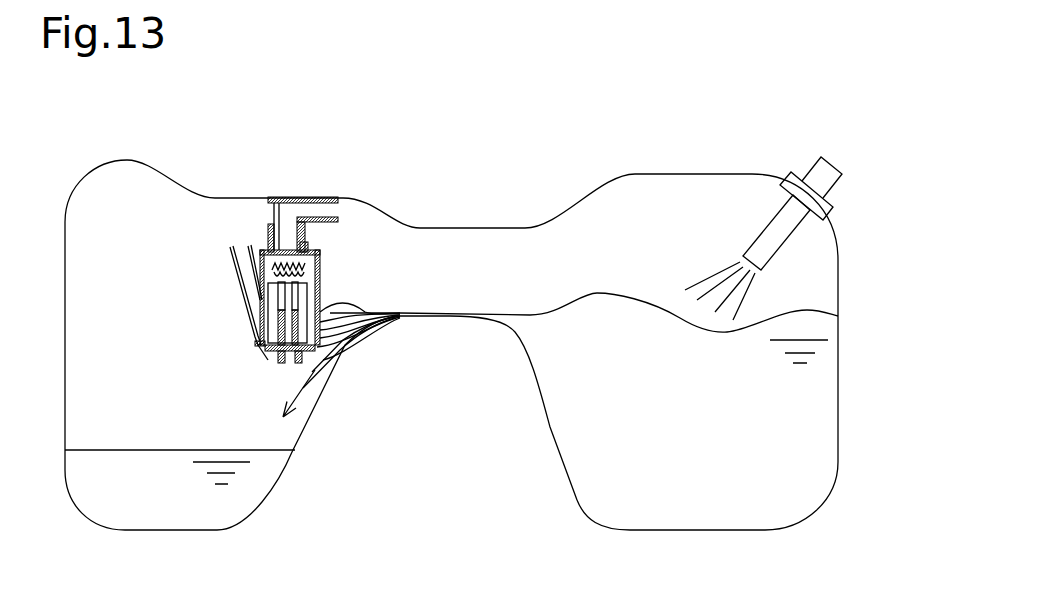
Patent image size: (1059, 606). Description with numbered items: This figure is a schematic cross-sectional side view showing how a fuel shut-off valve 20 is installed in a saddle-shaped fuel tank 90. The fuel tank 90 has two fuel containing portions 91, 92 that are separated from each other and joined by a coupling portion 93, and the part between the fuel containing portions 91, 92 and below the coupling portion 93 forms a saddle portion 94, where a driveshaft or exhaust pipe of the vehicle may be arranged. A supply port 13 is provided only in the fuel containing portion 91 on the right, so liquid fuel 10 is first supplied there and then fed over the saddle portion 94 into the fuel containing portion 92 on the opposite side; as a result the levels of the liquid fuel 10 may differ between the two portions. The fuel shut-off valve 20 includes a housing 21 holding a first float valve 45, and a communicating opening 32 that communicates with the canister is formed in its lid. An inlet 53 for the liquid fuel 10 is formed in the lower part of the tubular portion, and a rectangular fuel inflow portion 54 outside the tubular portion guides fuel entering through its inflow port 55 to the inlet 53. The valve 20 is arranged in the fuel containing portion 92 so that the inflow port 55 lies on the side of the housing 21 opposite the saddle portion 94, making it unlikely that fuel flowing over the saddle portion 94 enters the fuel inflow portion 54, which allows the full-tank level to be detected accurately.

The liquid fuel 10 is at (119, 452).
The supply port 13 is at (738, 263).
The fuel shut-off valve 20 is at (230, 260).
The housing 21 is at (322, 260).
The communicating opening 32 is at (283, 249).
The first float valve 45 is at (318, 297).
The inlet 53 is at (262, 322).
The fuel inflow portion 54 is at (240, 283).
The inflow port 55 is at (236, 247).
The saddle-shaped fuel tank 90 is at (451, 328).
The fuel containing portion 91 is at (645, 174).
The fuel containing portion 92 is at (136, 160).
The coupling portion 93 is at (467, 228).
The saddle portion 94 is at (550, 427).